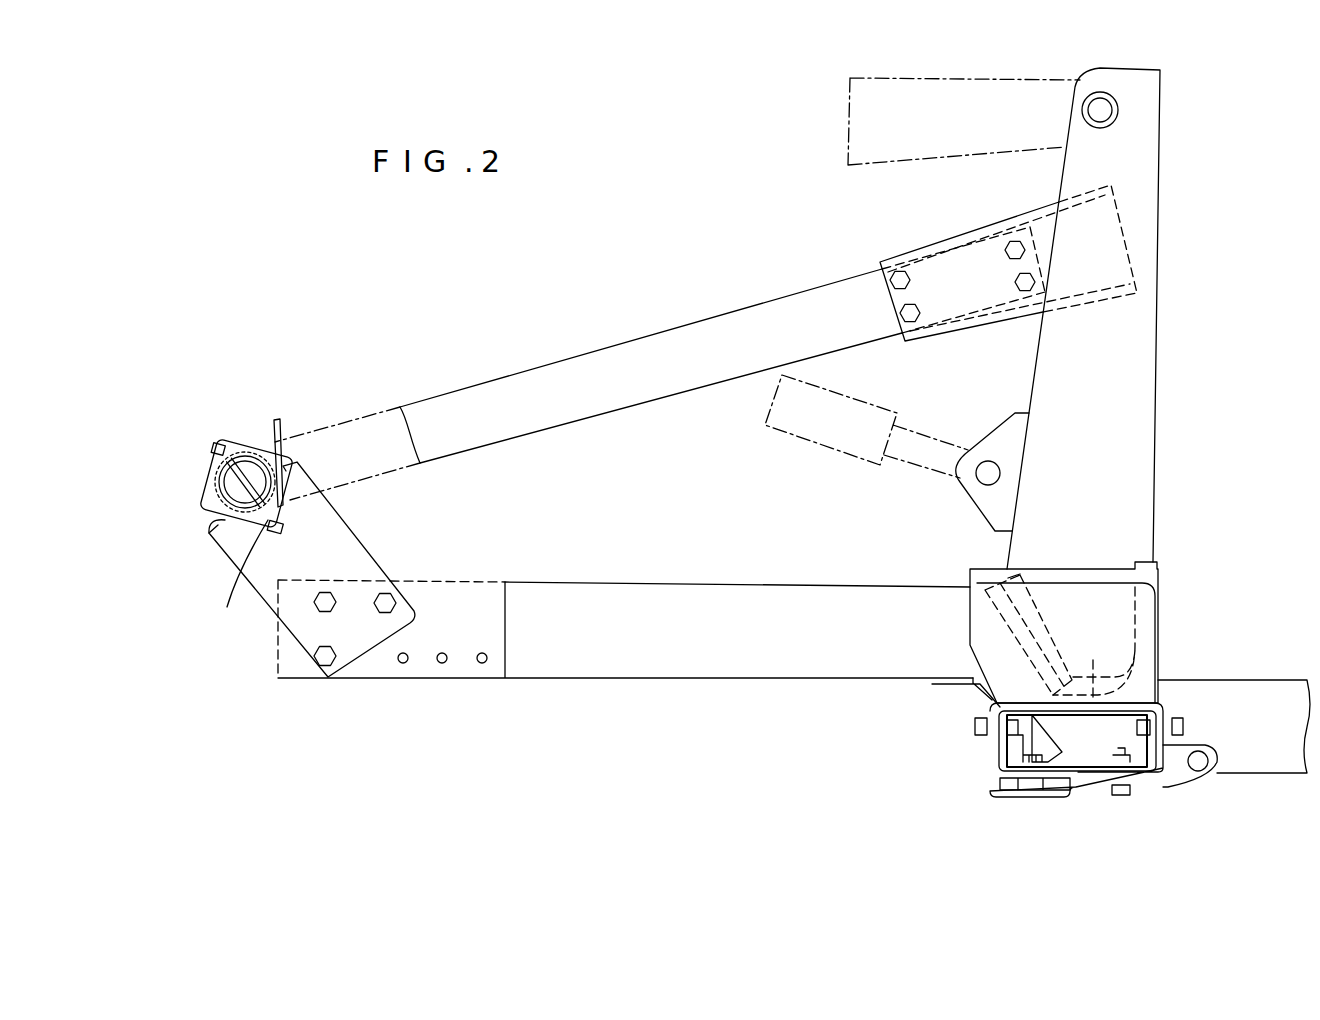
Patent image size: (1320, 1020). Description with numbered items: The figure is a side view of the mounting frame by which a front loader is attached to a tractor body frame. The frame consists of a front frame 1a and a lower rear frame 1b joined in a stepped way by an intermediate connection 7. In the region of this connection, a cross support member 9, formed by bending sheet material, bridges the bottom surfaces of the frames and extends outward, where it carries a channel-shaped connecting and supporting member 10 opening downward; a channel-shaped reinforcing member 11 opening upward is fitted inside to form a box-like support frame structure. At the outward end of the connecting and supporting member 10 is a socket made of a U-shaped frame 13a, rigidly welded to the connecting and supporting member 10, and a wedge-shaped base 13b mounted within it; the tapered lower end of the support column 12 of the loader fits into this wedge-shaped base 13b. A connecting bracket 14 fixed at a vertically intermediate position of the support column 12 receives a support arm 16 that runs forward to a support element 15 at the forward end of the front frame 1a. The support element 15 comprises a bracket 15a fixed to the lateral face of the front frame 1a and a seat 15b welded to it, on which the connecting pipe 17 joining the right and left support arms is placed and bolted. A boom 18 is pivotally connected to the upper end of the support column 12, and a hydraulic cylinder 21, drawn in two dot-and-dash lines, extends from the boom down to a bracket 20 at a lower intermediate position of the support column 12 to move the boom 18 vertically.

The front frame 1a is at (566, 600).
The rear frame 1b is at (1228, 685).
The intermediate connection 7 is at (925, 733).
The cross support member 9 is at (1000, 788).
The connecting and supporting member 10 is at (1093, 665).
The reinforcing member 11 is at (988, 752).
The support column 12 is at (1143, 362).
The U-shaped frame 13a is at (1165, 598).
The wedge-shaped base 13b is at (985, 610).
The connecting bracket 14 is at (985, 328).
The support element 15 is at (205, 548).
The bracket 15a is at (267, 608).
The seat 15b is at (219, 574).
The support arm 16 is at (548, 372).
The connecting pipe 17 is at (213, 483).
The boom 18 is at (938, 155).
The bracket 20 is at (977, 494).
The hydraulic cylinder 21 is at (860, 462).